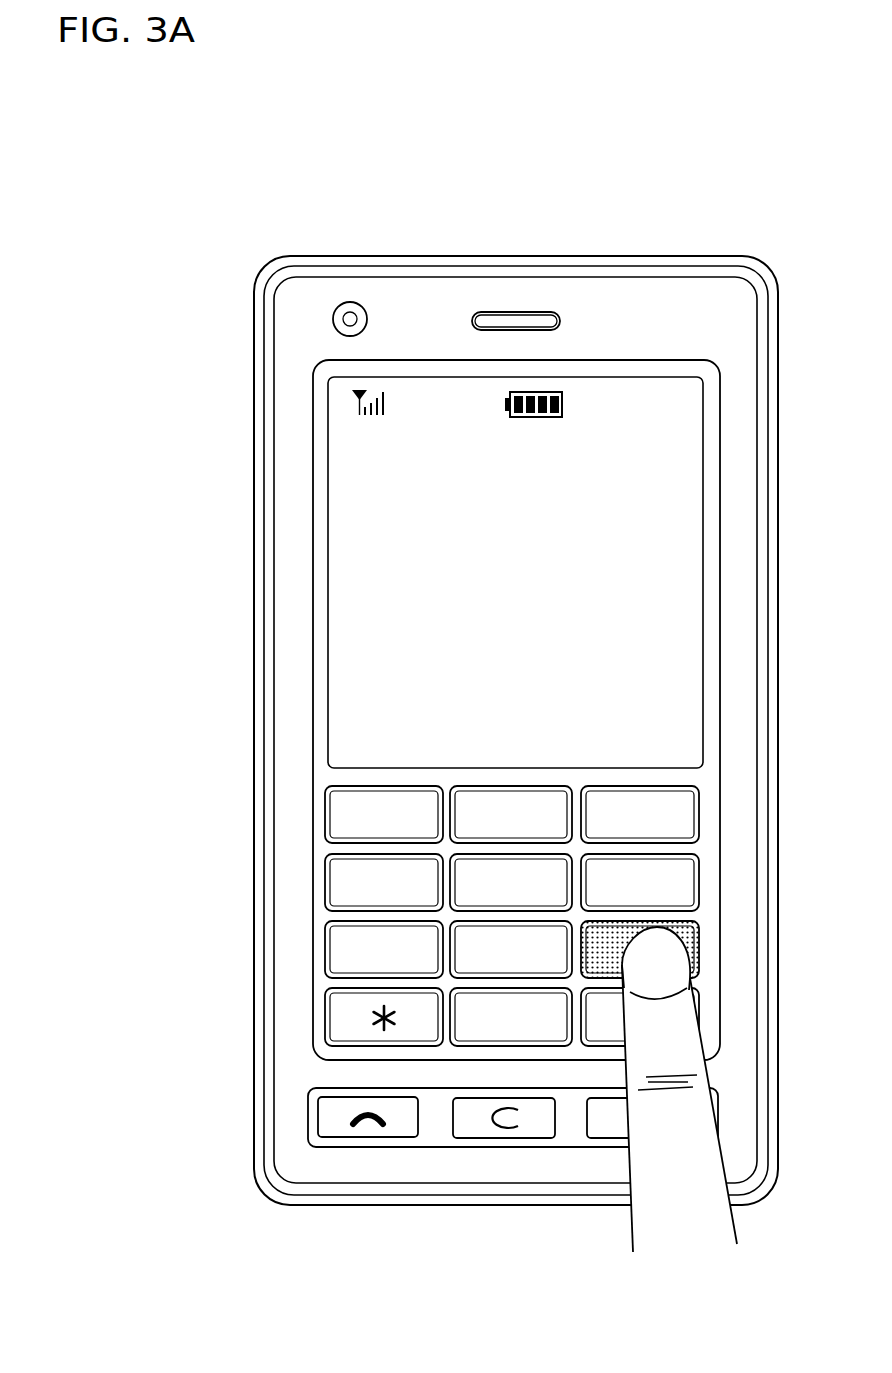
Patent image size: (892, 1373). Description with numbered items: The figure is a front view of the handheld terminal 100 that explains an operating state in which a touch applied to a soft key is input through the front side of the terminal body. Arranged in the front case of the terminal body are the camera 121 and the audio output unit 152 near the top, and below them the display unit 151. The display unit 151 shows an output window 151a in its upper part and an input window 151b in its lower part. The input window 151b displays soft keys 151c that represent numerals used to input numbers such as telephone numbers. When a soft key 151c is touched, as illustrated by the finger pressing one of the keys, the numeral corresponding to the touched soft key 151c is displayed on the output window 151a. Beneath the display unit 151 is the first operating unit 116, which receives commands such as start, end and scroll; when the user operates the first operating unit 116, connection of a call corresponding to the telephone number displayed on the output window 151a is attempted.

The handheld terminal 100 is at (230, 228).
The camera 121 is at (350, 317).
The audio output unit 152 is at (519, 321).
The display unit 151 is at (296, 533).
The output window 151a is at (345, 637).
The input window 151b is at (317, 917).
The soft key 151c is at (343, 812).
The first operating unit 116 is at (370, 1127).